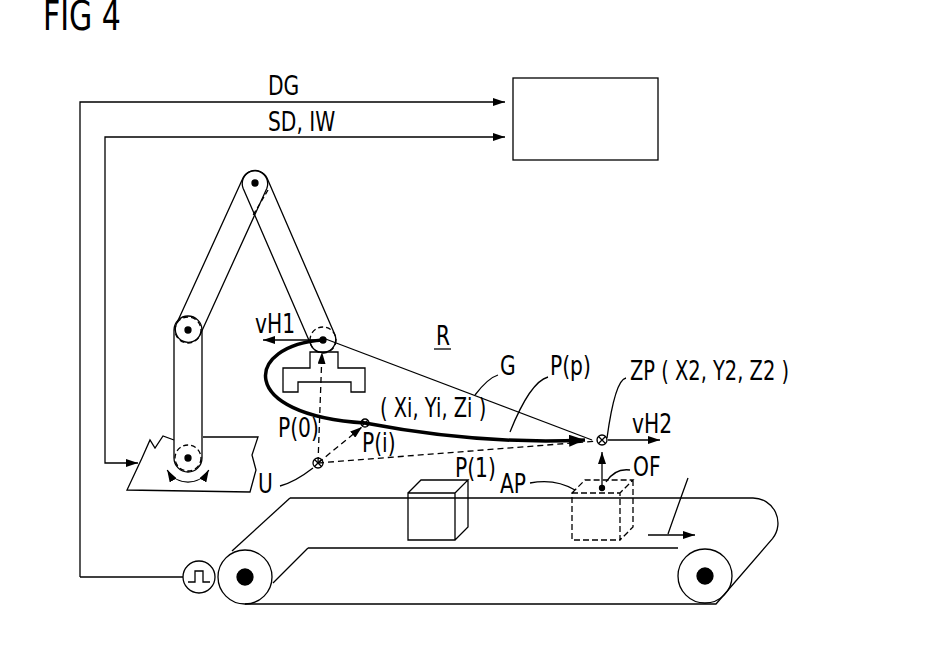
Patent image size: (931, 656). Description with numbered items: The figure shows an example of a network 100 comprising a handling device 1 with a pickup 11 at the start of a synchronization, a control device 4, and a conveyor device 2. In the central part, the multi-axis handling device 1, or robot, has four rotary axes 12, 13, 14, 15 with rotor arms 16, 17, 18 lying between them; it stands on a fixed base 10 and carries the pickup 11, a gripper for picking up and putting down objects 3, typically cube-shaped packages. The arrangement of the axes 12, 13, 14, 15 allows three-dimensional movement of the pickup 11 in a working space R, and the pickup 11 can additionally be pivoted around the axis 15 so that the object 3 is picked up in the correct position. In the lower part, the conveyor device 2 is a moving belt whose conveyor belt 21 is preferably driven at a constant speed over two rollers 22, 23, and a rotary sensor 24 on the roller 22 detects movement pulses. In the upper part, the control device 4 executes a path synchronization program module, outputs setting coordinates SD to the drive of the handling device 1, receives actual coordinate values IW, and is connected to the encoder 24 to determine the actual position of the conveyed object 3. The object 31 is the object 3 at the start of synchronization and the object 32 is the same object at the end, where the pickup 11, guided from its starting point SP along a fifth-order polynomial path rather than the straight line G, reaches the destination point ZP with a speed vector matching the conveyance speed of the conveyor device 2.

The handling device 1 is at (305, 215).
The conveyor device 2 is at (712, 497).
The object 3 is at (465, 510).
The object at start of synchronization 31 is at (410, 520).
The object at end of synchronization 32 is at (575, 520).
The control device 4 is at (590, 162).
The fixed base 10 is at (162, 487).
The pickup 11 is at (286, 385).
The rotary axis 12 is at (178, 450).
The rotary axis 13 is at (184, 330).
The rotary axis 14 is at (250, 184).
The rotary axis 15 is at (330, 338).
The rotor arm 16 is at (188, 400).
The rotor arm 17 is at (228, 248).
The rotor arm 18 is at (292, 262).
The conveyor belt 21 is at (725, 515).
The roller 22 is at (258, 582).
The roller 23 is at (698, 582).
The rotary sensor 24 is at (188, 590).
The network 100 is at (712, 197).